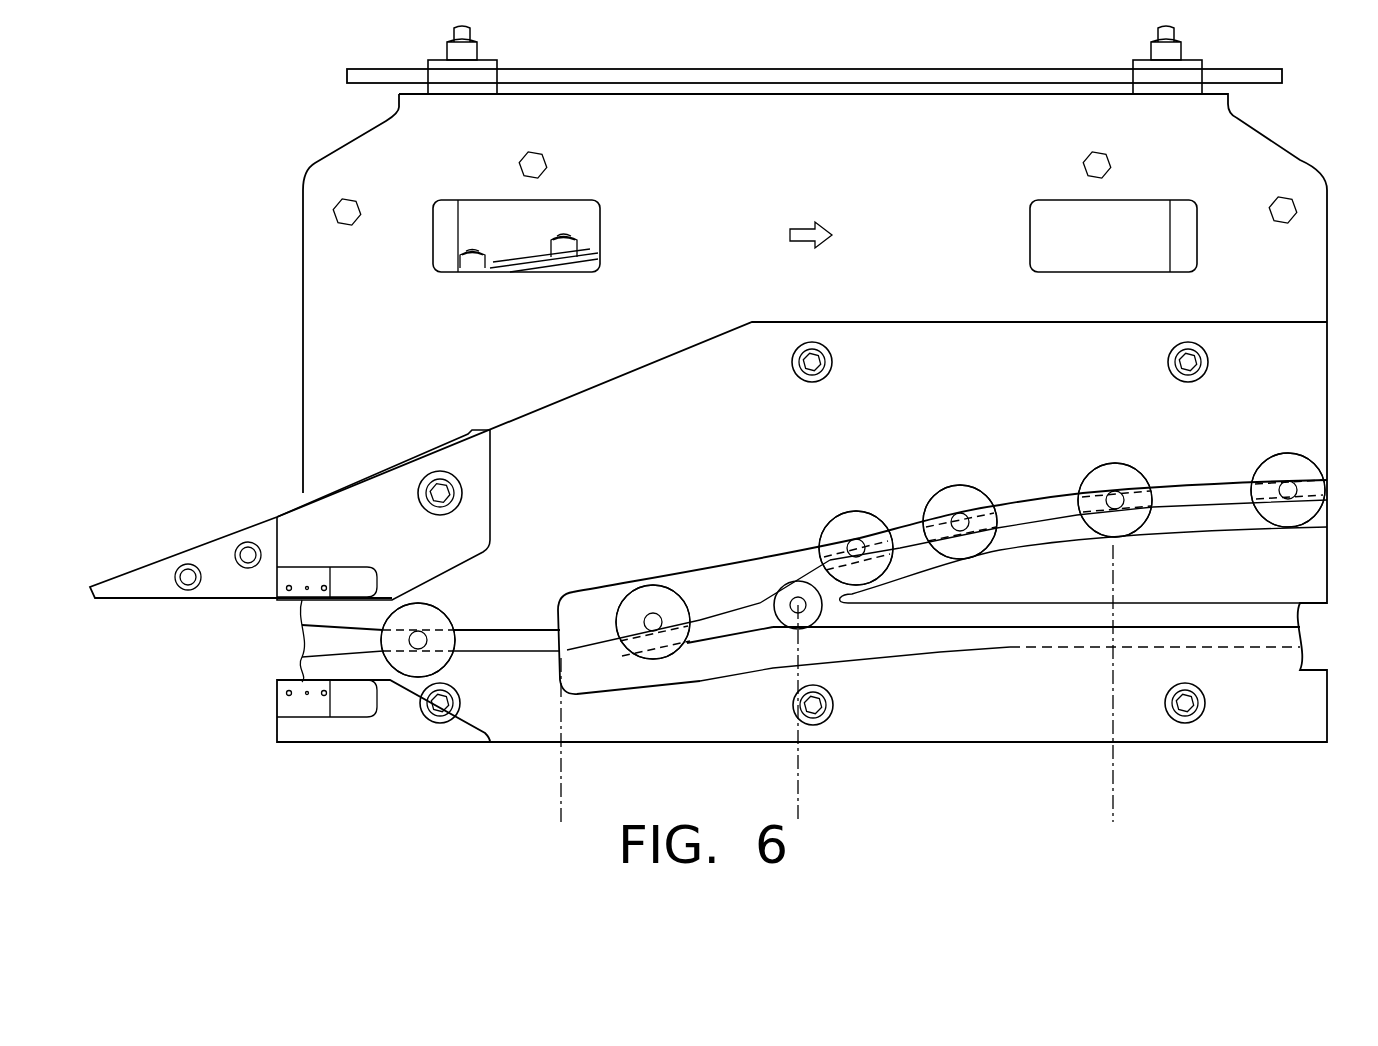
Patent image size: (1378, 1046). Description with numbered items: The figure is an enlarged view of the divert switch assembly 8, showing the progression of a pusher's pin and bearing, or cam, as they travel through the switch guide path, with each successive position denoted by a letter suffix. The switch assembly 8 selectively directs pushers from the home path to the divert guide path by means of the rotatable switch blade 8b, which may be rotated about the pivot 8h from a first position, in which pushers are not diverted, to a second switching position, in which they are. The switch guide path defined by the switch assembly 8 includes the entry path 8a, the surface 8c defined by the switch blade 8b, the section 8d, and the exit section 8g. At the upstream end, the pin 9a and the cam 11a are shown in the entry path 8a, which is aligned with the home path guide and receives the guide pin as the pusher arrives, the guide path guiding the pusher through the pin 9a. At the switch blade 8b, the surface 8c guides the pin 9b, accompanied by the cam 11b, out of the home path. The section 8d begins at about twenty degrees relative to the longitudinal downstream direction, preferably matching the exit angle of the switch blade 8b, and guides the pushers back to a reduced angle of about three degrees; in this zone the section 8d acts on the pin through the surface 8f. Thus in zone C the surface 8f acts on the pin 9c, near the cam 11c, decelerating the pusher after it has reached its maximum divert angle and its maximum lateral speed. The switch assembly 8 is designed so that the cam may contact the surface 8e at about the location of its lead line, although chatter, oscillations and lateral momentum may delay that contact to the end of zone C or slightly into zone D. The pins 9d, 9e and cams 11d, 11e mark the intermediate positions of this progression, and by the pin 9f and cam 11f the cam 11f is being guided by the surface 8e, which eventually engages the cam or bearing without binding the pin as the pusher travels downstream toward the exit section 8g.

The switch assembly 8 is at (212, 190).
The entry path 8a is at (327, 643).
The switch blade 8b is at (712, 600).
The surface 8c is at (646, 603).
The section 8d is at (895, 530).
The surface 8e is at (908, 553).
The surface 8f is at (1040, 508).
The exit section 8g is at (1232, 490).
The pivot 8h is at (790, 580).
The pusher pin 9a is at (420, 637).
The pusher pin 9b is at (655, 620).
The pusher pin 9c is at (855, 545).
The pusher pin 9d is at (960, 520).
The pusher pin 9e is at (1115, 498).
The pusher pin 9f is at (1289, 488).
The cam 11a is at (447, 667).
The cam 11b is at (675, 650).
The cam 11c is at (878, 572).
The cam 11d is at (990, 540).
The cam 11e is at (1135, 532).
The cam 11f is at (1313, 520).